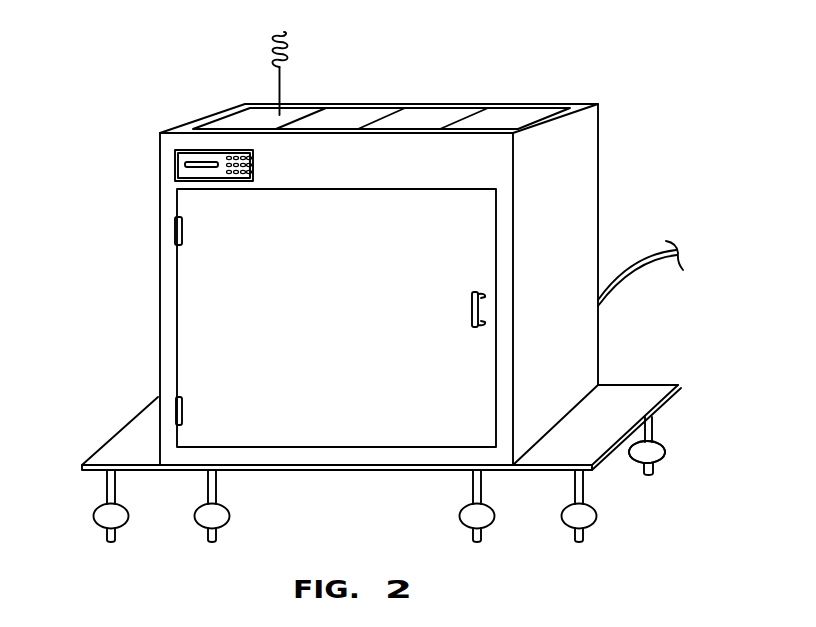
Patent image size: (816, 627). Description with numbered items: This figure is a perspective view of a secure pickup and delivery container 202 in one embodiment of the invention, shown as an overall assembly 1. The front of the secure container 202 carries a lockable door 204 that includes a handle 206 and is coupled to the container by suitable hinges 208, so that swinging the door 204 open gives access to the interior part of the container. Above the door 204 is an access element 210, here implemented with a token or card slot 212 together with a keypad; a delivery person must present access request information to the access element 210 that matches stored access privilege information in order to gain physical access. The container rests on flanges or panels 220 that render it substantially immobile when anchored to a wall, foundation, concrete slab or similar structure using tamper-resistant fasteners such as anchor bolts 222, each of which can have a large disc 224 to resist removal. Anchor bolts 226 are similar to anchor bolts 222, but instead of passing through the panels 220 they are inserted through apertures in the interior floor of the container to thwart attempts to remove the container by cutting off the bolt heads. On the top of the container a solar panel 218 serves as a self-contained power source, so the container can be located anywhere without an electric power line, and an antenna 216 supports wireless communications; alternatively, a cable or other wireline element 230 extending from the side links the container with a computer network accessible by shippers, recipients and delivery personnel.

The secure delivery storage unit 1 is at (141, 43).
The secure pickup and delivery container 202 is at (158, 167).
The lockable door 204 is at (185, 305).
The handle 206 is at (485, 300).
The hinges 208 is at (175, 228).
The access element 210 is at (176, 153).
The token or card slot 212 is at (207, 162).
The antenna 216 is at (284, 32).
The solar panel 218 is at (429, 112).
The flanges or panels 220 is at (115, 436).
The anchor bolts 222 is at (107, 495).
The large disc 224 is at (665, 450).
The anchor bolts 226 is at (217, 495).
The cable or other wireline element 230 is at (652, 263).